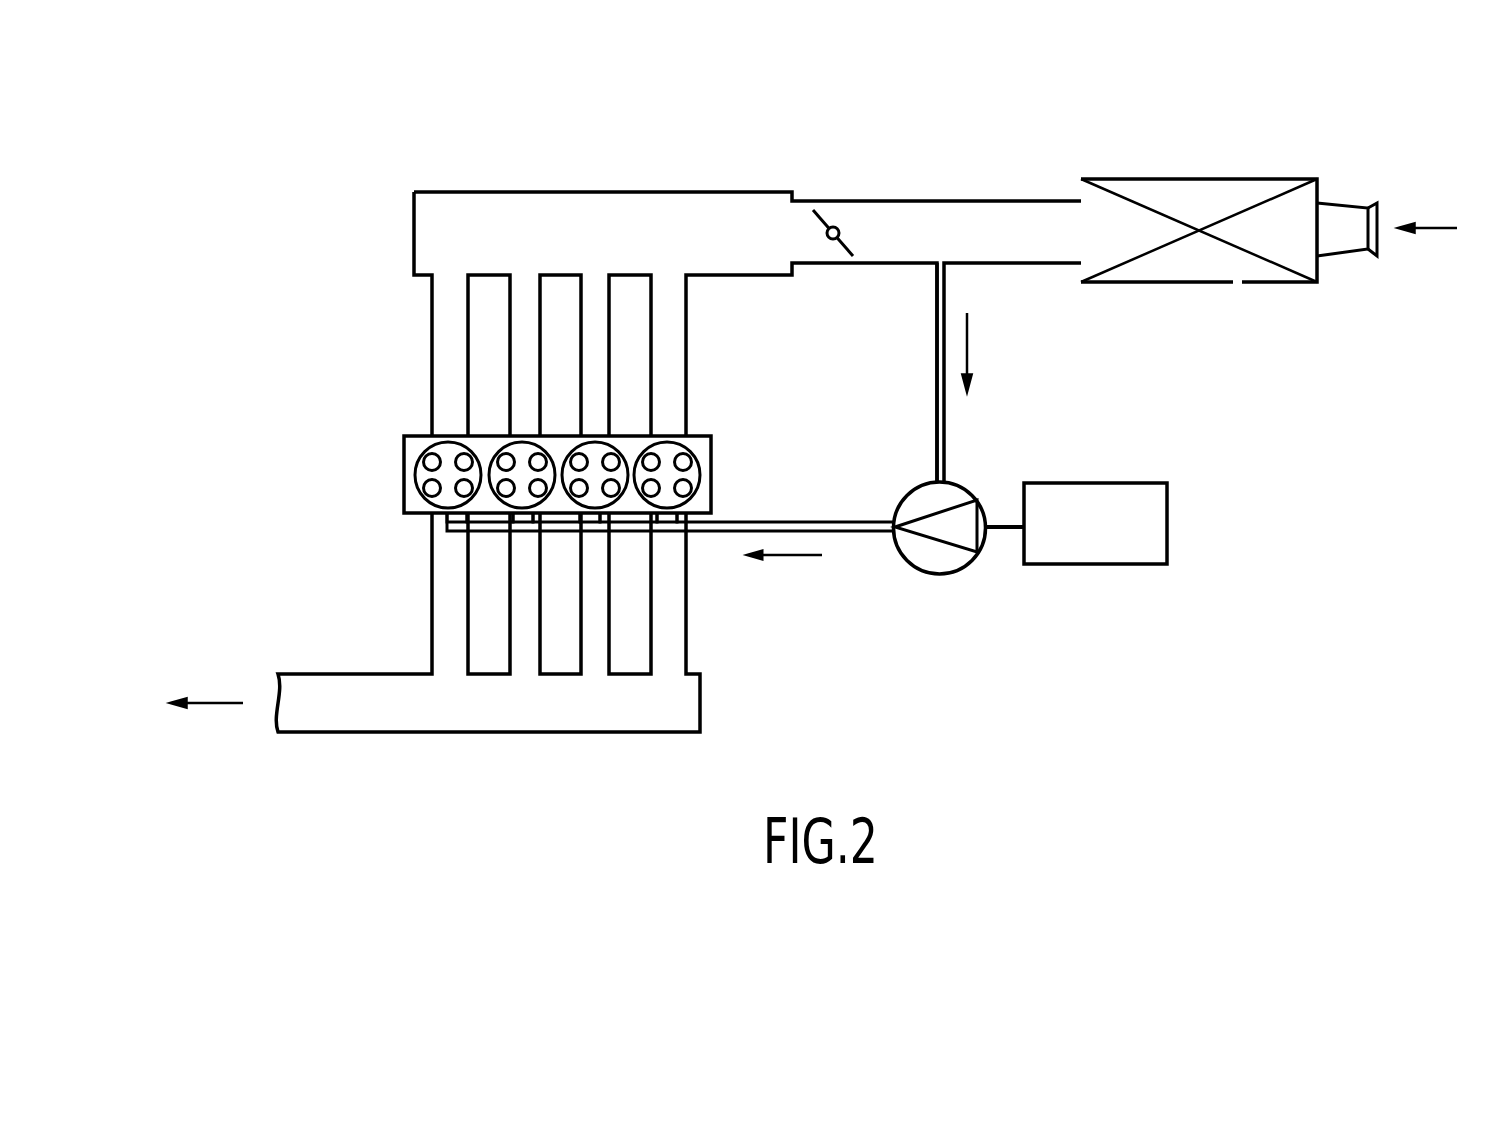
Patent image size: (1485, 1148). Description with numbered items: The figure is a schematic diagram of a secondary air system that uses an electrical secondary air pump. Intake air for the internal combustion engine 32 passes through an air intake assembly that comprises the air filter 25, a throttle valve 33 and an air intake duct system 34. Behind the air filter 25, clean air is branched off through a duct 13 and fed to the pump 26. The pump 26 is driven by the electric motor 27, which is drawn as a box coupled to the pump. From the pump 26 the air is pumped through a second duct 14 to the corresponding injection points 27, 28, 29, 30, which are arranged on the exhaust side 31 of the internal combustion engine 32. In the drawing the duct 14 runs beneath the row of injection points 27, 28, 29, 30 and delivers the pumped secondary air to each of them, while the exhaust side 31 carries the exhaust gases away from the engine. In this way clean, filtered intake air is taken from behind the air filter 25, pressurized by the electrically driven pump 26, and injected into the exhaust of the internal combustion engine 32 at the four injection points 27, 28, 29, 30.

The duct 13 is at (937, 405).
The duct 14 is at (788, 520).
The air filter 25 is at (1248, 273).
The pump 26 is at (947, 561).
The electric motor 27 is at (445, 517).
The injection point 28 is at (523, 520).
The injection point 29 is at (595, 523).
The injection point 30 is at (667, 523).
The exhaust side 31 is at (705, 624).
The internal combustion engine 32 is at (402, 460).
The throttle valve 33 is at (855, 243).
The air intake duct system 34 is at (405, 283).